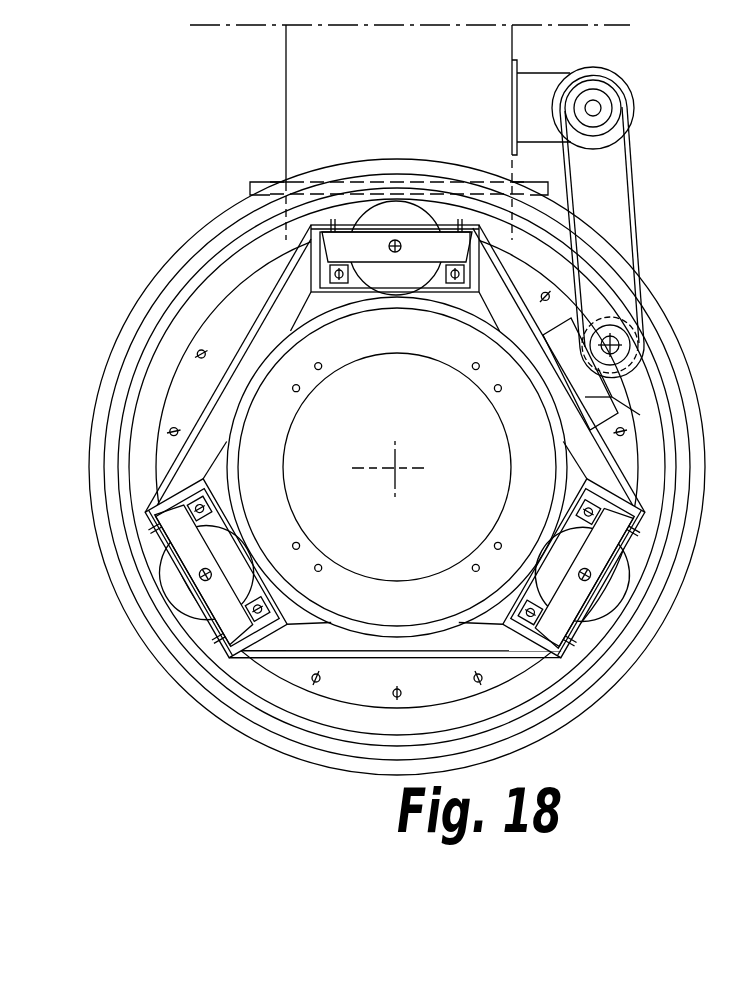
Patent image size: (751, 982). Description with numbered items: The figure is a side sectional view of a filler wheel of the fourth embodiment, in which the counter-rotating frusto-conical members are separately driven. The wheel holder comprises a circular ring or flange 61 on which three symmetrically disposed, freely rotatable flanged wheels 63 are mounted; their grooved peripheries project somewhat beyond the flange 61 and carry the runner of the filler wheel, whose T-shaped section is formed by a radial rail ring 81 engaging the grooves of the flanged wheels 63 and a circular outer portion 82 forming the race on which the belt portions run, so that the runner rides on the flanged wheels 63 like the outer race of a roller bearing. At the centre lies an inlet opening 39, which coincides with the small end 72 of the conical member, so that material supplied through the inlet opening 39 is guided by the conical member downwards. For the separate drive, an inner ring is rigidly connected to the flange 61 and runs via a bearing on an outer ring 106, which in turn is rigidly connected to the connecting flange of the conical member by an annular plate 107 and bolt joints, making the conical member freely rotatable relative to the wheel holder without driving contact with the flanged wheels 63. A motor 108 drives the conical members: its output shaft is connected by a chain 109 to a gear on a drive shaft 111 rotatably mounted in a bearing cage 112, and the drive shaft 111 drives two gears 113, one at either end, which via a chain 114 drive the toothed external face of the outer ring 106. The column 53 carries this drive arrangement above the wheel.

The inlet opening 39 is at (378, 518).
The column 53 is at (286, 110).
The flange 61 is at (223, 320).
The flanged wheel 63 is at (392, 215).
The small end 72 is at (500, 420).
The radial rail ring 81 is at (305, 745).
The outer portion 82 is at (265, 735).
The outer ring 106 is at (540, 463).
The annular plate 107 is at (275, 410).
The motor 108 is at (623, 83).
The chain 109 is at (628, 190).
The drive shaft 111 is at (612, 346).
The bearing cage 112 is at (612, 397).
The gear 113 is at (621, 328).
The chain 114 is at (618, 412).